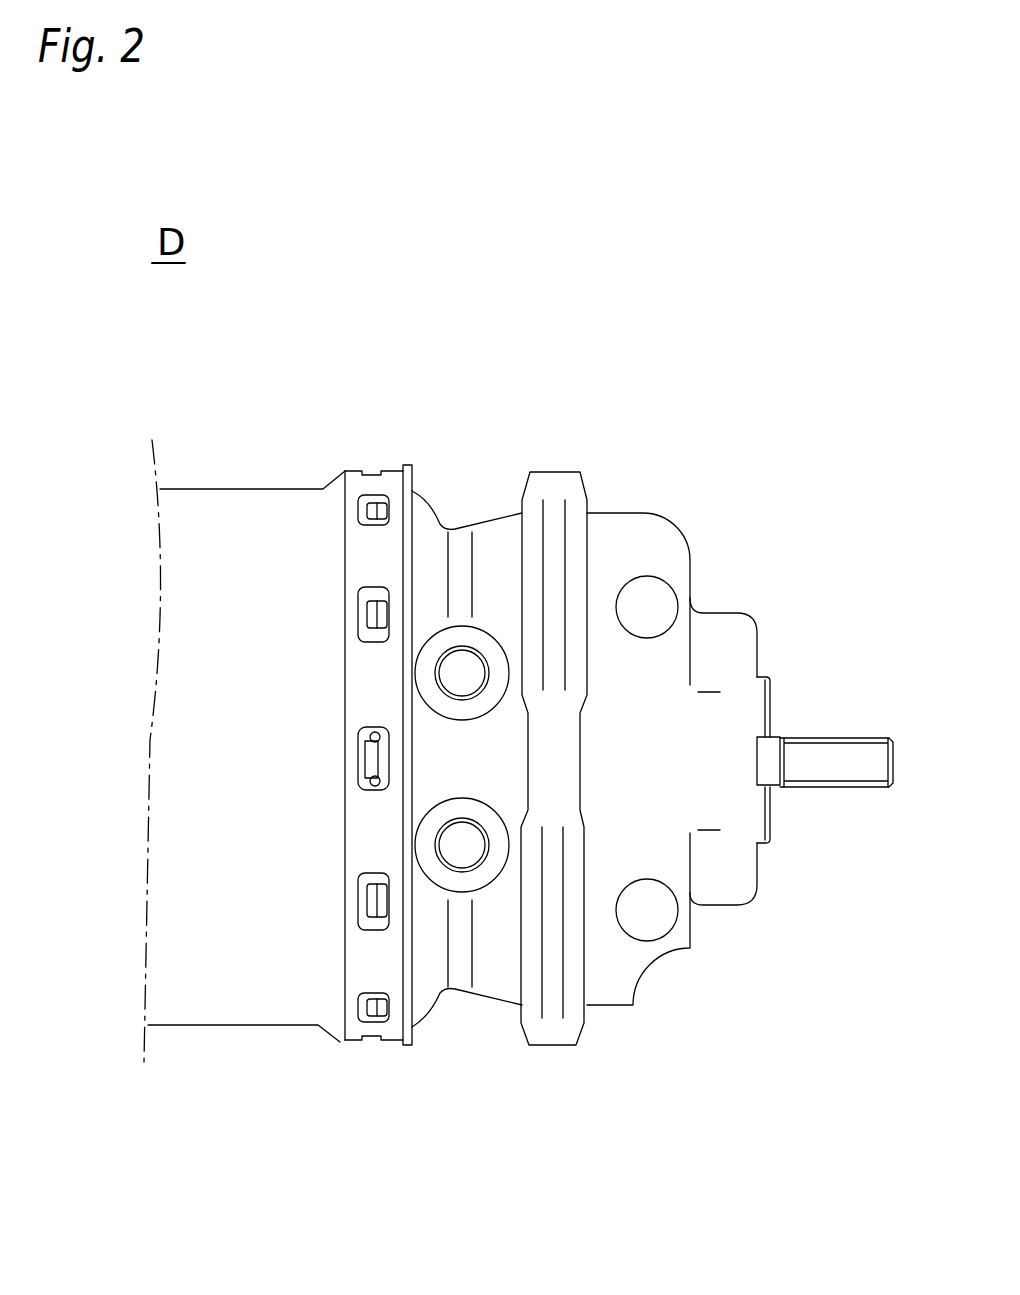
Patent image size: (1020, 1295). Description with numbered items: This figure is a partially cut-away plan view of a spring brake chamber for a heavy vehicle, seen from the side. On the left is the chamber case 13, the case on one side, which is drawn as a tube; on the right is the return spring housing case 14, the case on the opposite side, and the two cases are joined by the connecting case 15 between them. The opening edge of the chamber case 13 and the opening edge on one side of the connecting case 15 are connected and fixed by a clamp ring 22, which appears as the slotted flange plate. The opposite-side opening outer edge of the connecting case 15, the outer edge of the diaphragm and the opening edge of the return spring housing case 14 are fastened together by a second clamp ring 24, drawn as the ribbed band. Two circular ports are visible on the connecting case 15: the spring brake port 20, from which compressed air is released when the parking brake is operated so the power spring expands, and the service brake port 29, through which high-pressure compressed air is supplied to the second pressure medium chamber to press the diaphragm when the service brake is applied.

The chamber case 13 is at (237, 1027).
The return spring housing case 14 is at (658, 515).
The connecting case 15 is at (503, 980).
The spring brake port 20 is at (460, 660).
The clamp ring 22 is at (350, 1043).
The clamp ring 24 is at (553, 498).
The service brake port 29 is at (453, 847).